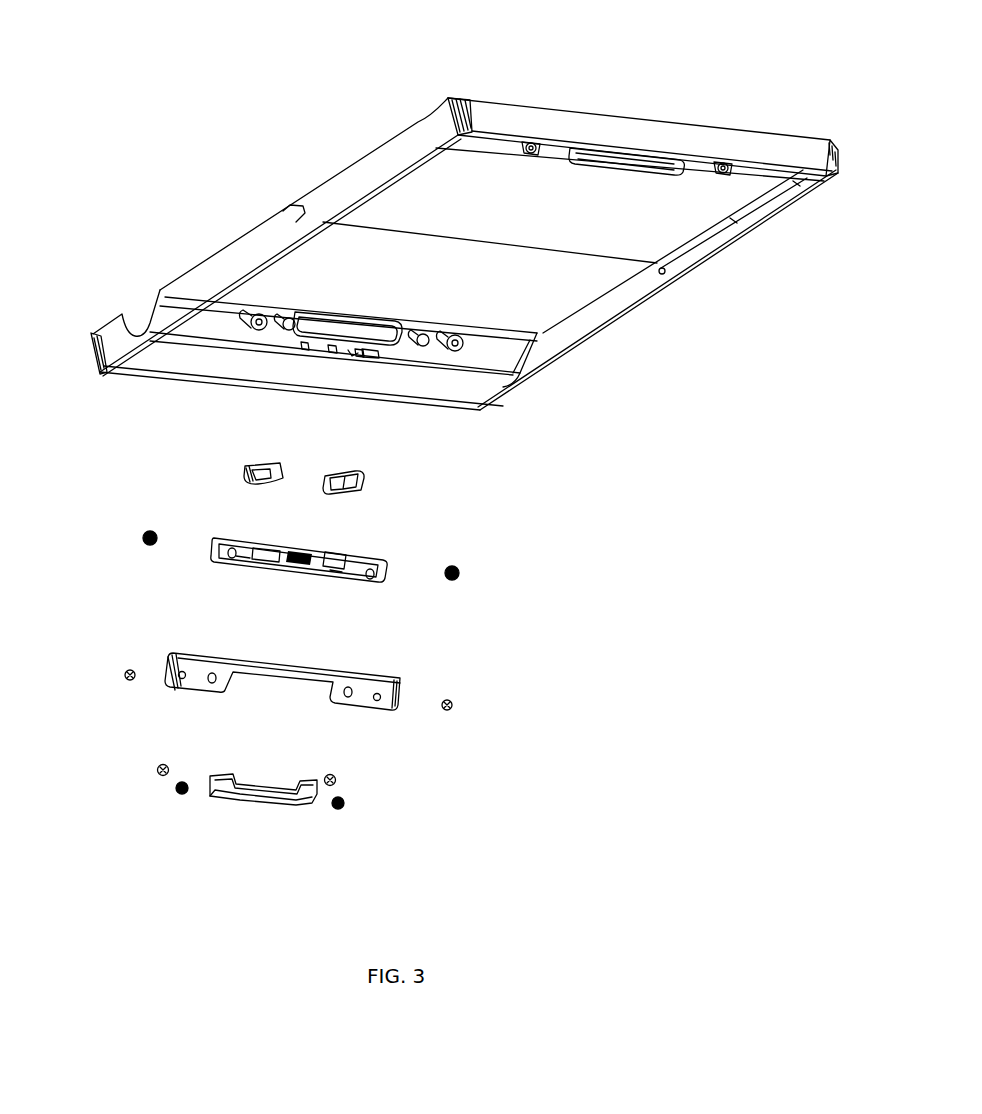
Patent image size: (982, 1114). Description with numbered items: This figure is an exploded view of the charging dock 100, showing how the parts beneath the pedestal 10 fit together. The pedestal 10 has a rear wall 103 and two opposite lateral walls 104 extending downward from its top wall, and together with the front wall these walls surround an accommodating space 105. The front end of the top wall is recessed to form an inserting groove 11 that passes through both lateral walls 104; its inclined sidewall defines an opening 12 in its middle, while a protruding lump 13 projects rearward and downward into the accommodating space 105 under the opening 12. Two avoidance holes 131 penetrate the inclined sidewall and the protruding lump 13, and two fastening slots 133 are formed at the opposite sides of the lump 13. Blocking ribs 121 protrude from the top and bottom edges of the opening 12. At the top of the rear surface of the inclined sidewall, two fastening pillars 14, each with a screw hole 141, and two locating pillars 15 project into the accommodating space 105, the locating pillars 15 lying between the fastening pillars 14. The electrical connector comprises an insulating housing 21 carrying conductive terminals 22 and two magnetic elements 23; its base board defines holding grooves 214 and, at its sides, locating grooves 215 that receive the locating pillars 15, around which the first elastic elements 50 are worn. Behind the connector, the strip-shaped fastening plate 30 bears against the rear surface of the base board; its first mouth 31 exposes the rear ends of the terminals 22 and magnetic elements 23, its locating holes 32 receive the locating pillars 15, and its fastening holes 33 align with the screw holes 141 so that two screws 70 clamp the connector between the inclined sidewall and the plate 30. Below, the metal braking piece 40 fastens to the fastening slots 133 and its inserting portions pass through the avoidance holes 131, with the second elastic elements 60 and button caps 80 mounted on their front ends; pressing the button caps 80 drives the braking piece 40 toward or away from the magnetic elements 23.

The charging dock 100 is at (80, 36).
The rear wall 103 is at (622, 130).
The lateral walls 104 is at (372, 178).
The accommodating space 105 is at (542, 270).
The pedestal 10 is at (302, 268).
The inserting groove 11 is at (142, 324).
The opening 12 is at (348, 327).
The protruding lump 13 is at (367, 352).
The avoidance holes 131 is at (355, 352).
The fastening slots 133 is at (303, 343).
The blocking ribs 121 is at (360, 348).
The fastening pillars 14 is at (245, 309).
The screw hole 141 is at (262, 320).
The locating pillars 15 is at (272, 308).
The insulating housing 21 is at (366, 544).
The conductive terminals 22 is at (298, 555).
The holding grooves 214 is at (333, 558).
The locating grooves 215 is at (337, 575).
The magnetic element 23 is at (375, 483).
The fastening plate 30 is at (218, 662).
The first mouth 31 is at (263, 684).
The locating holes 32 is at (348, 692).
The fastening holes 33 is at (183, 678).
The metal braking piece 40 is at (258, 803).
The first elastic elements 50 is at (142, 545).
The second elastic elements 60 is at (178, 795).
The screws 70 is at (127, 679).
The button caps 80 is at (155, 771).